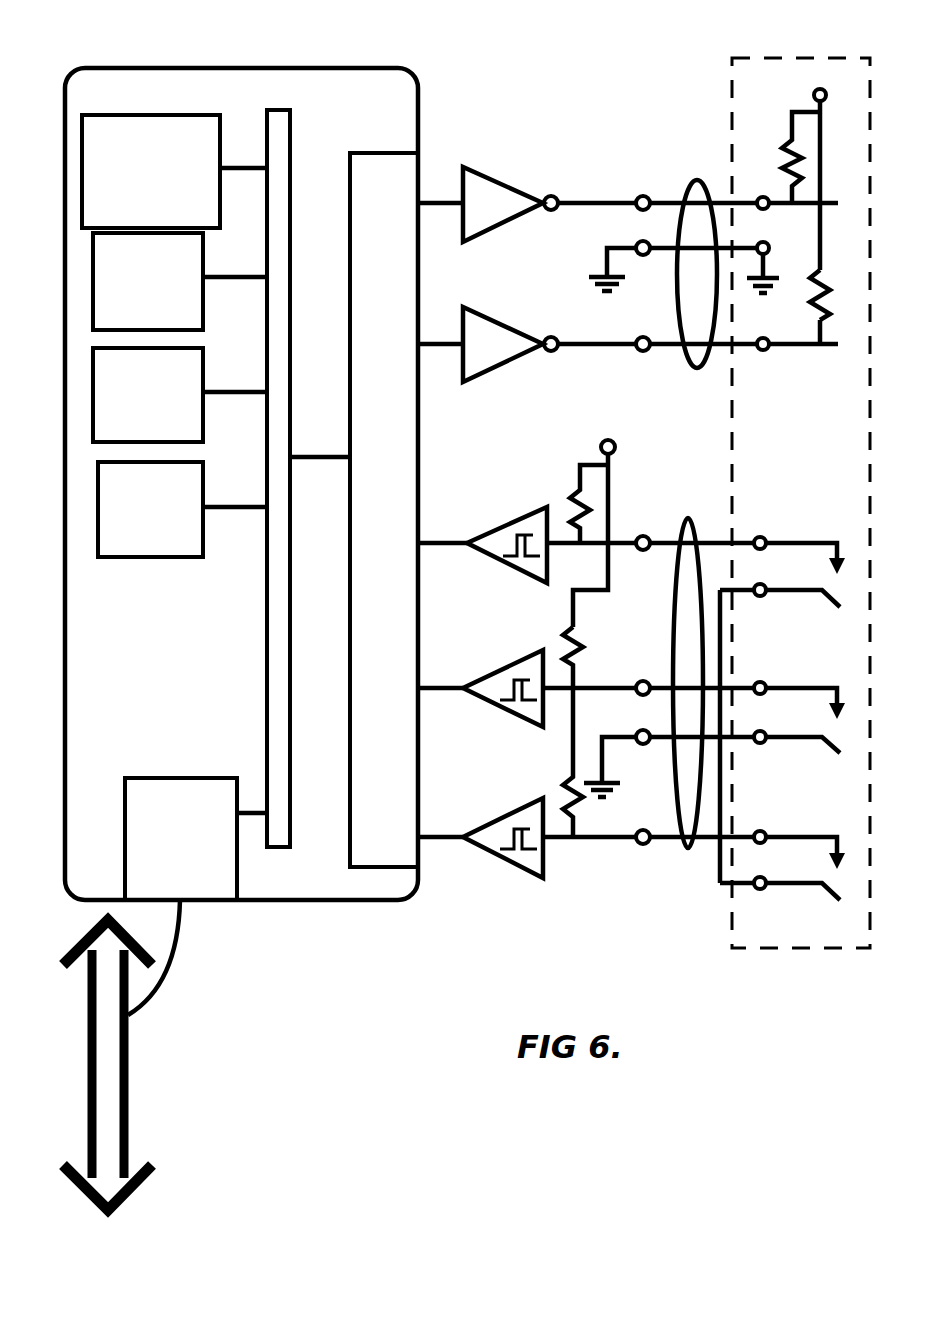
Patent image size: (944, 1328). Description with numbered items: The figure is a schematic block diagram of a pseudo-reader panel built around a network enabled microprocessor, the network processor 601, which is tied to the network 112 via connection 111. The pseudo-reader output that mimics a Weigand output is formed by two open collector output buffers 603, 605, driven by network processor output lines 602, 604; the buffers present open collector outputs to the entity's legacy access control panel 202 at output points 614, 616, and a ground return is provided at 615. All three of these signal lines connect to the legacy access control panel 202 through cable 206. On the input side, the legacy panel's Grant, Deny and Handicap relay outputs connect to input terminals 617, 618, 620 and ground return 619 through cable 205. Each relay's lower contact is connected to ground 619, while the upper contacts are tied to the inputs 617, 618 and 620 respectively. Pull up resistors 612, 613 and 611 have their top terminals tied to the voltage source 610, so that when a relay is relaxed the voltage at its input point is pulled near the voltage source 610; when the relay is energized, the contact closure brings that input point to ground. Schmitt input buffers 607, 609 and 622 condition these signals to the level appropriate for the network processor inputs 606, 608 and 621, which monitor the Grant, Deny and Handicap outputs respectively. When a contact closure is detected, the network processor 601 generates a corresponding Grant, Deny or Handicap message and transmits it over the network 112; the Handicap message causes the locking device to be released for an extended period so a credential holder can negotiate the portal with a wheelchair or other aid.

The network processor 601 is at (240, 58).
The network processor output line 602 is at (441, 196).
The open collector output buffer 603 is at (500, 183).
The network processor output line 604 is at (441, 337).
The open collector output buffer 605 is at (500, 326).
The network processor input 606 is at (452, 541).
The input buffer 607 is at (520, 570).
The network processor input 608 is at (452, 686).
The input buffer 609 is at (520, 720).
The voltage source 610 is at (605, 440).
The pull up resistor 611 is at (568, 790).
The pull up resistor 612 is at (572, 495).
The pull up resistor 613 is at (640, 633).
The output point 614 is at (640, 196).
The ground return 615 is at (640, 241).
The output point 616 is at (640, 337).
The input terminal 617 is at (641, 536).
The input terminal 618 is at (642, 696).
The ground return 619 is at (643, 745).
The input terminal 620 is at (640, 846).
The network processor input 621 is at (452, 835).
The input buffer 622 is at (520, 870).
The legacy access control panel 202 is at (730, 137).
The cable 205 is at (703, 511).
The cable 206 is at (701, 367).
The connection 111 is at (182, 905).
The network 112 is at (128, 1108).